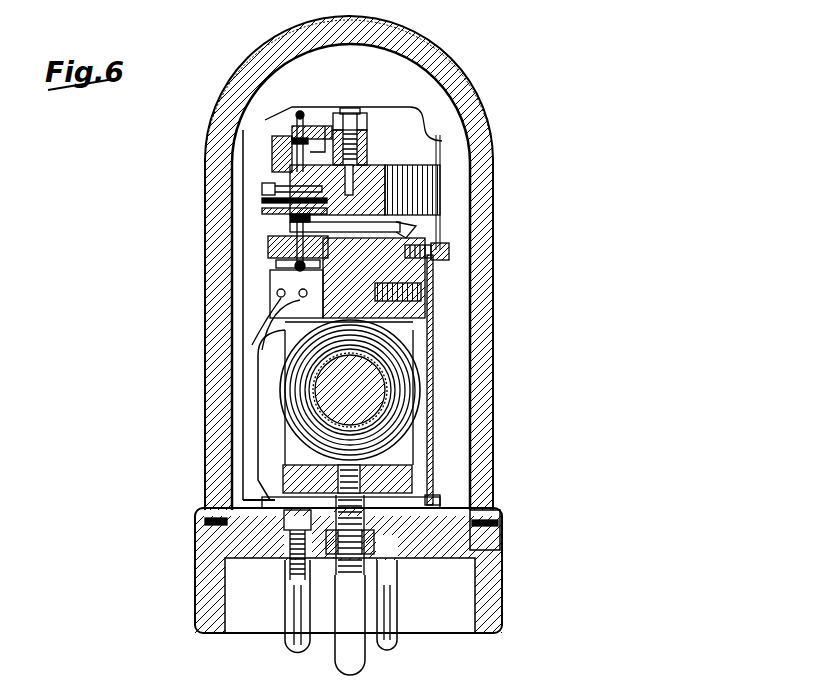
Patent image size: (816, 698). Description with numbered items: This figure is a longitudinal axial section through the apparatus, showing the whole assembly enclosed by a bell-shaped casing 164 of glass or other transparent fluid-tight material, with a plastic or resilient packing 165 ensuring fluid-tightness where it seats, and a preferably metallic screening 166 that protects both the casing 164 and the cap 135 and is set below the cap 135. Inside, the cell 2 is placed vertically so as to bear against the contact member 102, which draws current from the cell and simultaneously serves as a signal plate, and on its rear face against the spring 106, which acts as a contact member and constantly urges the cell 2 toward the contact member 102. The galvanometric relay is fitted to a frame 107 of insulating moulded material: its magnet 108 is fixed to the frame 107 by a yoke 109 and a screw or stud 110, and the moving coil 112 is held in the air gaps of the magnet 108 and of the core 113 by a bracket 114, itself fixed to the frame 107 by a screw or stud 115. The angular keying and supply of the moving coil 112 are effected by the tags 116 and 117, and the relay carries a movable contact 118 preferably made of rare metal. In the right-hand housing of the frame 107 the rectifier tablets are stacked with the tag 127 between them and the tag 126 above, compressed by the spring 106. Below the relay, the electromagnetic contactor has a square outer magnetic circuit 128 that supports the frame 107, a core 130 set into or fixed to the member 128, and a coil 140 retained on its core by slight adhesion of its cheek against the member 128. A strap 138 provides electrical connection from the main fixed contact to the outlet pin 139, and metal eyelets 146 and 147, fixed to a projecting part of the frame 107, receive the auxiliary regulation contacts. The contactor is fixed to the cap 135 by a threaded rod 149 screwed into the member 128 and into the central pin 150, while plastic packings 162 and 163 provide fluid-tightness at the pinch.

The cell 2 is at (472, 360).
The contact member 102 is at (440, 168).
The spring 106 is at (408, 298).
The frame 107 is at (432, 196).
The magnet 108 is at (410, 176).
The yoke 109 is at (370, 143).
The screw or stud 110 is at (346, 110).
The moving coil 112 is at (262, 188).
The core 113 is at (262, 211).
The bracket 114 is at (272, 136).
The screw or stud 115 is at (262, 200).
The tag 116 is at (258, 284).
The tag 117 is at (260, 116).
The movable contact 118 is at (418, 238).
The tag 126 is at (445, 230).
The tag 127 is at (432, 334).
The outer magnetic circuit 128 is at (405, 466).
The core 130 is at (378, 408).
The cap 135 is at (498, 536).
The strap 138 is at (262, 356).
The outlet pin 139 is at (332, 642).
The coil 140 is at (412, 389).
The metal eyelet 146 is at (275, 318).
The metal eyelet 147 is at (278, 301).
The threaded rod 149 is at (430, 497).
The central pin 150 is at (358, 658).
The plastic packing 162 is at (372, 535).
The plastic packing 163 is at (276, 540).
The bell-shaped casing 164 is at (438, 60).
The packing 165 is at (205, 522).
The screening 166 is at (275, 52).